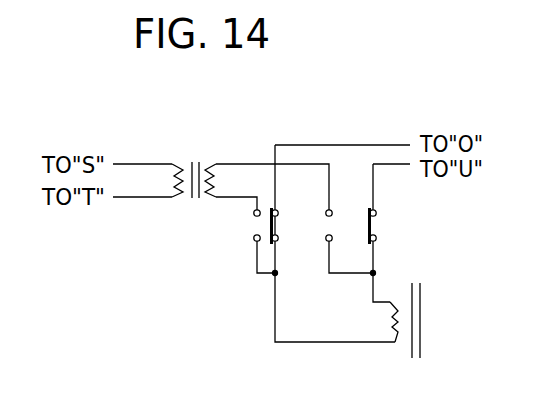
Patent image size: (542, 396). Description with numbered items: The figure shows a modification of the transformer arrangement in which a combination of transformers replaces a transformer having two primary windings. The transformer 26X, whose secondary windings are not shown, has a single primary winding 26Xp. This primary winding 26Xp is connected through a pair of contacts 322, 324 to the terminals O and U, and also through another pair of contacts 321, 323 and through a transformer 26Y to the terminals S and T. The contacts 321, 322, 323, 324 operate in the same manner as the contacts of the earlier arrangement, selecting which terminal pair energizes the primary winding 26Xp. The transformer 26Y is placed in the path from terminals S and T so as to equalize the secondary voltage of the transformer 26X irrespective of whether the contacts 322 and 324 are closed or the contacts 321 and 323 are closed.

The transformer 26Y is at (195, 152).
The contact 321 is at (255, 227).
The contact 322 is at (307, 206).
The contact 323 is at (328, 227).
The contact 324 is at (377, 226).
The transformer 26X is at (416, 282).
The single primary winding 26Xp is at (392, 322).